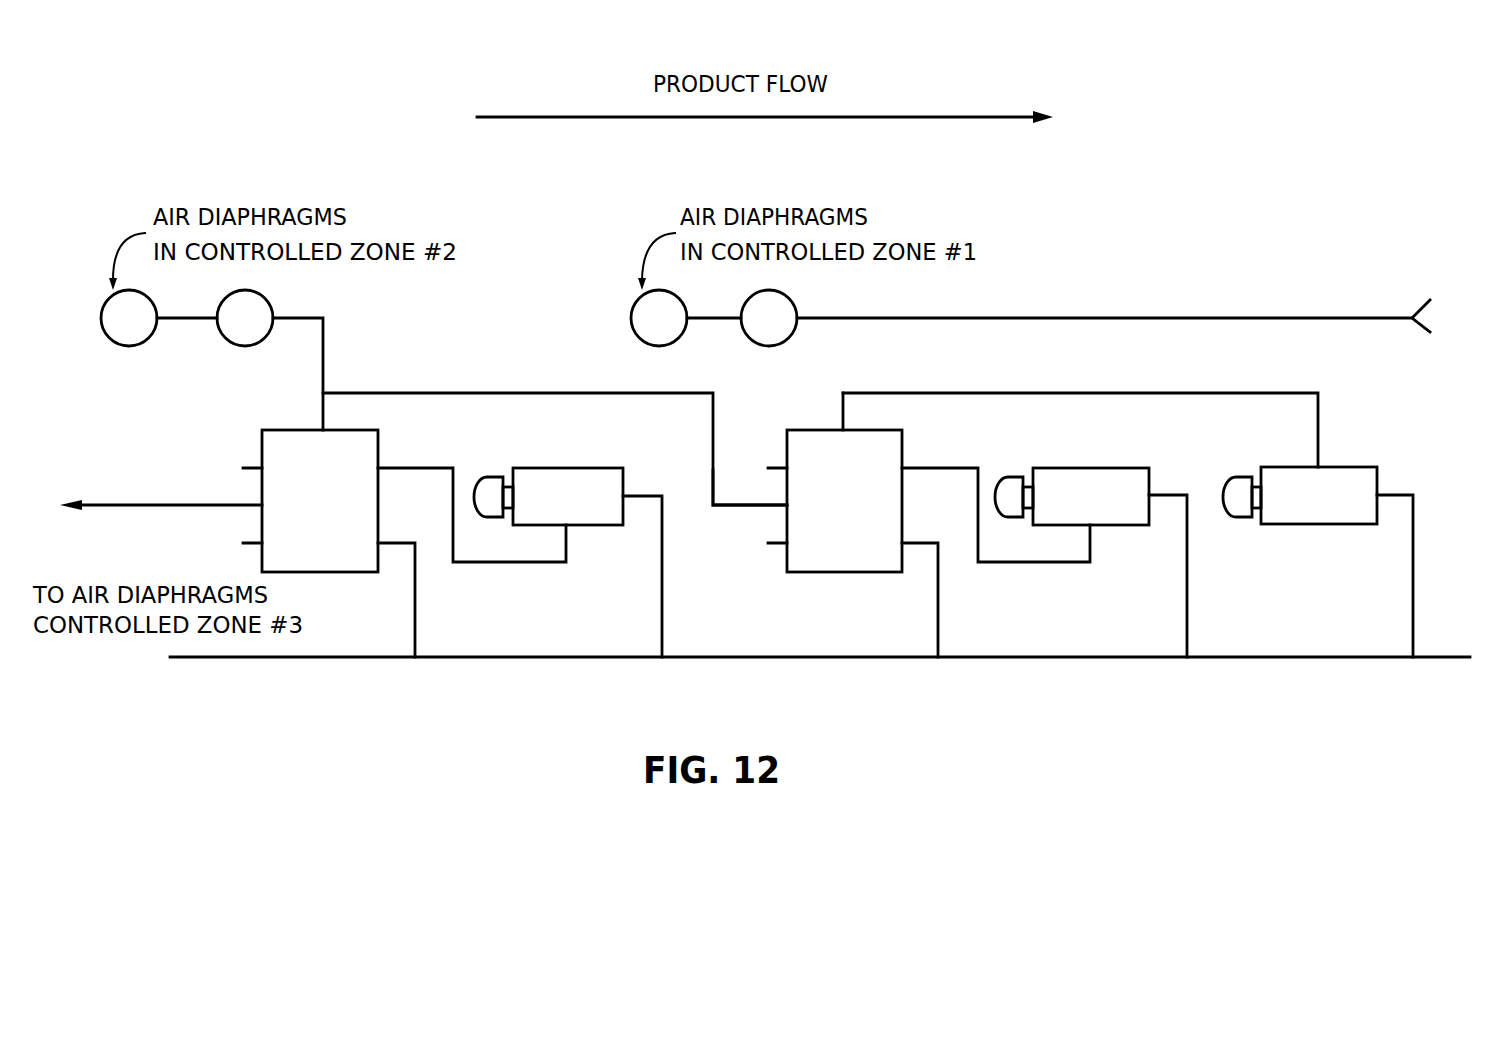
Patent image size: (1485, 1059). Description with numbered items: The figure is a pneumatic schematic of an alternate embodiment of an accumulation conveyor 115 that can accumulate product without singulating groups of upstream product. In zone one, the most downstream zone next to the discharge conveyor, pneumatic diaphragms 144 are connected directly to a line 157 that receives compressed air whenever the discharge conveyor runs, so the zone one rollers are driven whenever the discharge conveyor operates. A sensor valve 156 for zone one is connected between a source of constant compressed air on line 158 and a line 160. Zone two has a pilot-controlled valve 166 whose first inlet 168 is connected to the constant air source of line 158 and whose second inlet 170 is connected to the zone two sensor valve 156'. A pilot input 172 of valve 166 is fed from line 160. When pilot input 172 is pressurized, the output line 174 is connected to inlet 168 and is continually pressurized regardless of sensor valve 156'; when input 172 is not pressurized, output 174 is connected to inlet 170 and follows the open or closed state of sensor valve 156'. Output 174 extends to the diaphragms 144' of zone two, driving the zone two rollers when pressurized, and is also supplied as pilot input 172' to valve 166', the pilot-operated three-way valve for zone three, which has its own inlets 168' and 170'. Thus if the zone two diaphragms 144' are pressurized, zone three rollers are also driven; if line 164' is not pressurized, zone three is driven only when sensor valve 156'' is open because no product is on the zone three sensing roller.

The accumulation conveyor 115 is at (1112, 177).
The pneumatic diaphragms 144 is at (737, 336).
The pneumatic diaphragms 144' is at (166, 346).
The sensor valve 156 is at (1350, 544).
The sensor valve 156' is at (1096, 547).
The sensor valve 156'' is at (573, 547).
The line 157 is at (1118, 315).
The line 158 is at (822, 657).
The line 160 is at (1320, 418).
The line 164' is at (555, 410).
The pilot-controlled valve 166 is at (812, 535).
The pilot operated three-way valve 166' is at (312, 533).
The first inlet 168 is at (964, 600).
The first inlet 168' is at (410, 569).
The second inlet 170 is at (996, 482).
The second inlet 170' is at (472, 482).
The pilot input 172 is at (798, 411).
The pilot input 172' is at (271, 374).
The output line 174 is at (747, 508).